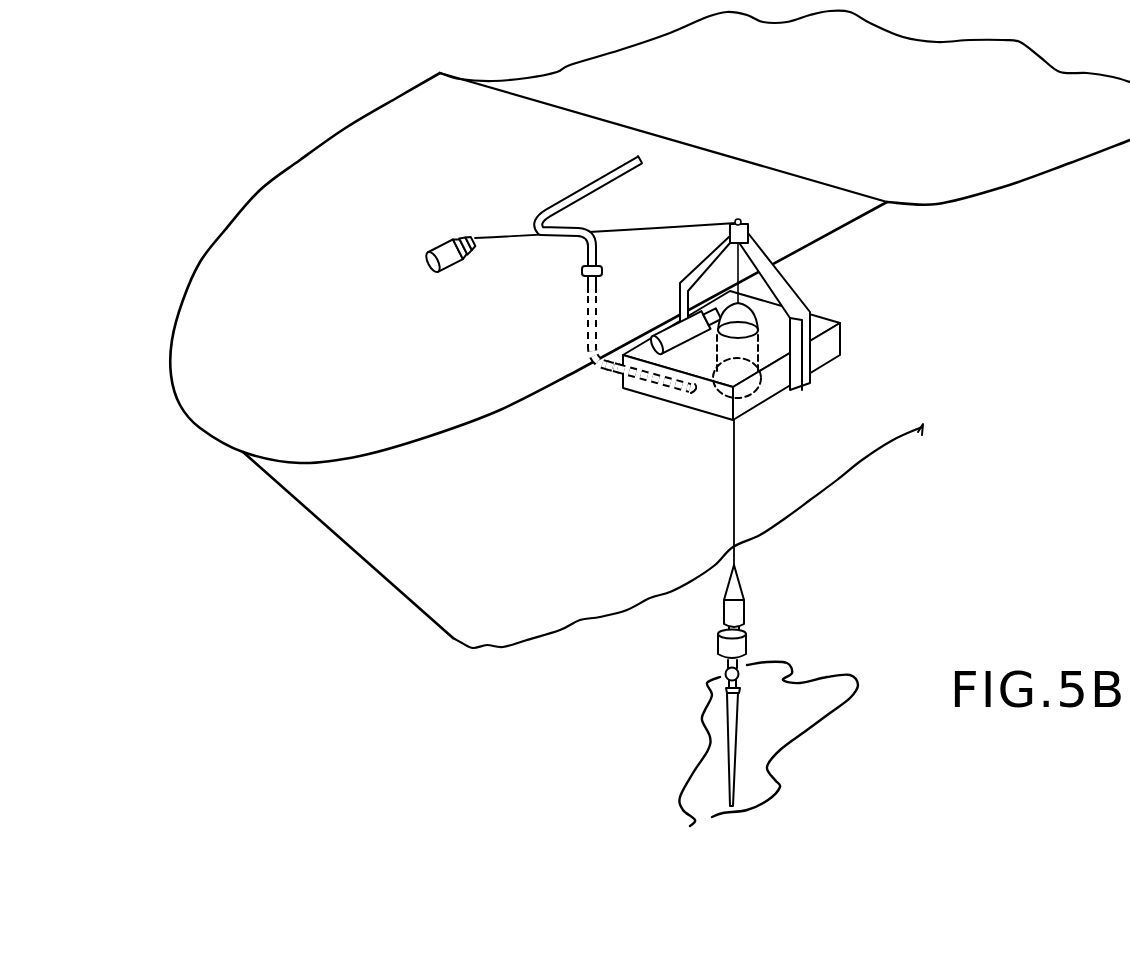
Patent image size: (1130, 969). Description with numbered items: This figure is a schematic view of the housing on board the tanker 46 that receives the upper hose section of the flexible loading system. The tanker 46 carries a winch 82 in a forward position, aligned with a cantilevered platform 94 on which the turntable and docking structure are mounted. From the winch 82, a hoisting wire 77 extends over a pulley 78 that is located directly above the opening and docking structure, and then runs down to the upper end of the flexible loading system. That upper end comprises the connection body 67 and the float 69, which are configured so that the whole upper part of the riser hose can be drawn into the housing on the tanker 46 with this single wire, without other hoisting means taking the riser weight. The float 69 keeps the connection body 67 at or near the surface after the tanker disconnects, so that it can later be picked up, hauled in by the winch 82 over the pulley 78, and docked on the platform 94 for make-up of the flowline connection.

The tanker 46 is at (345, 126).
The hoisting wire 77 is at (672, 222).
The pulley 78 is at (742, 223).
The winch 82 is at (435, 243).
The cantilevered platform 94 is at (845, 339).
The connection body 67 is at (743, 600).
The float 69 is at (748, 648).